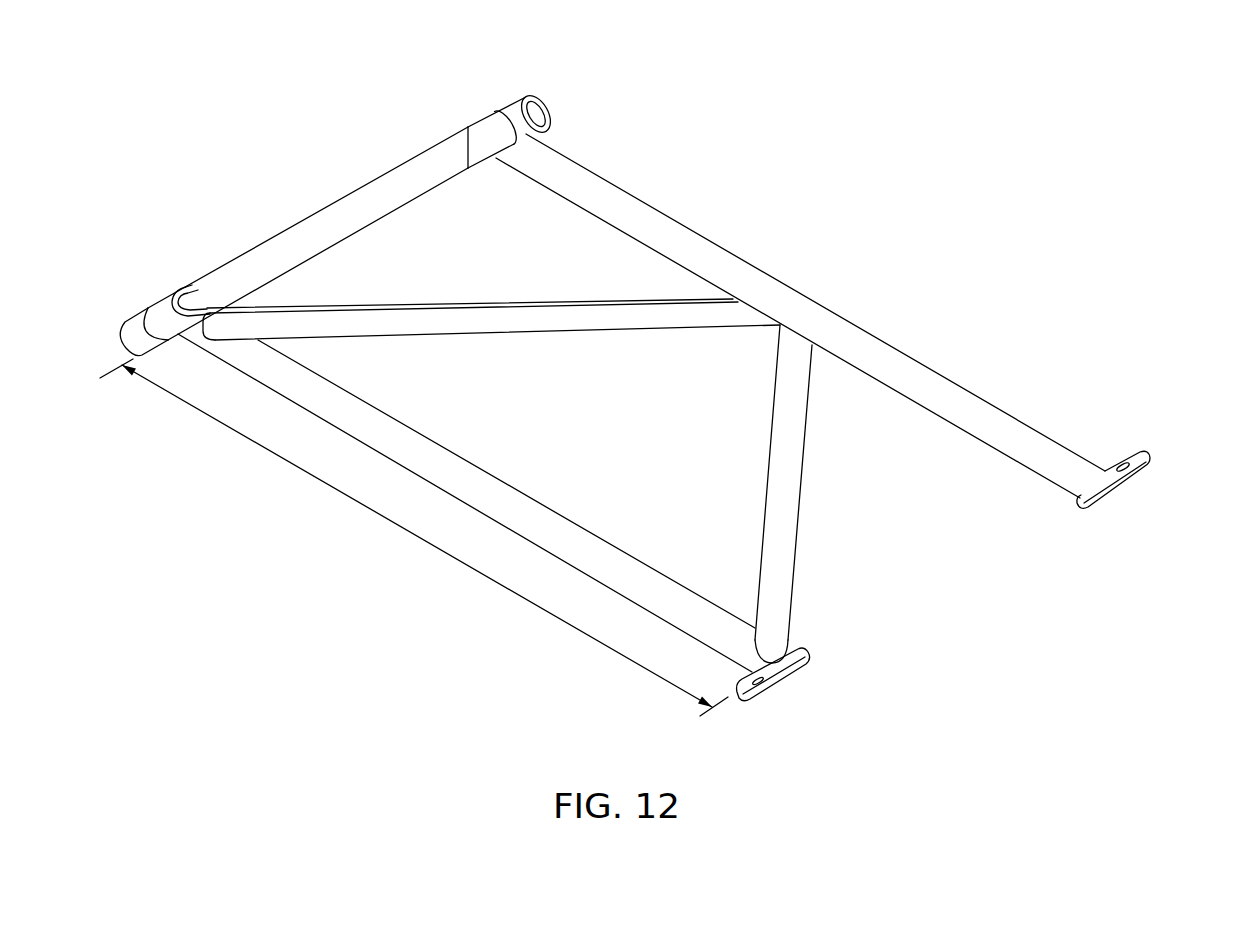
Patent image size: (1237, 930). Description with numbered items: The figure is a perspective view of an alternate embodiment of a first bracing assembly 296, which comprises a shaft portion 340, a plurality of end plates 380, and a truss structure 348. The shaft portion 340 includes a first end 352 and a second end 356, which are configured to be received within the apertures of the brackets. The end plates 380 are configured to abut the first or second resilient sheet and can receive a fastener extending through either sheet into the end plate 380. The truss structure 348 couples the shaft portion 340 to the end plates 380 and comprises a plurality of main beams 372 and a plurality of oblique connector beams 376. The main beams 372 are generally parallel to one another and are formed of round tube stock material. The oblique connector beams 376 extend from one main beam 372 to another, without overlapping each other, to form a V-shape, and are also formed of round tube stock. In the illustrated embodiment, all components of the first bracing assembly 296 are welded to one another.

The first bracing assembly 296 is at (804, 204).
The shaft portion 340 is at (318, 215).
The truss structure 348 is at (418, 544).
The first end 352 is at (528, 97).
The second end 356 is at (138, 320).
The main beam 372 is at (918, 377).
The oblique connector beam 376 is at (550, 331).
The end plate 380 is at (766, 696).